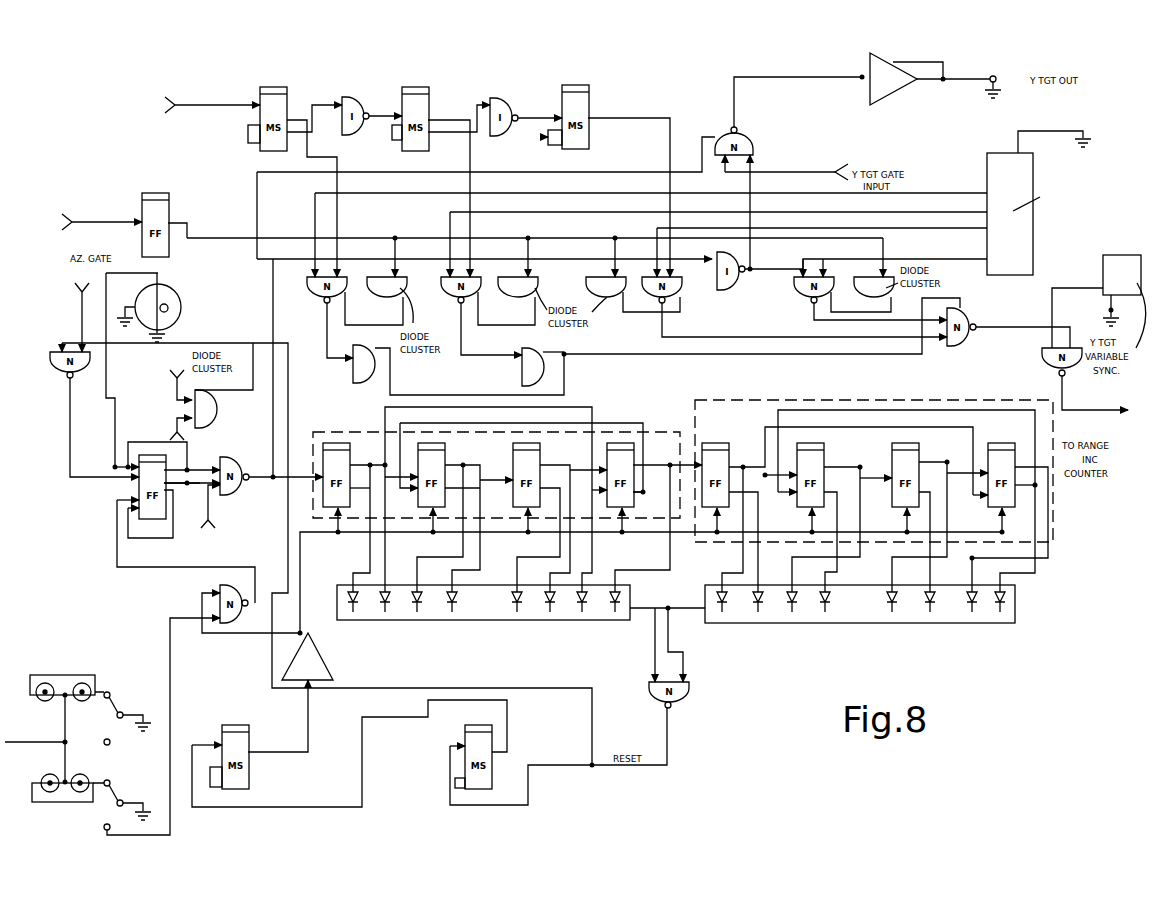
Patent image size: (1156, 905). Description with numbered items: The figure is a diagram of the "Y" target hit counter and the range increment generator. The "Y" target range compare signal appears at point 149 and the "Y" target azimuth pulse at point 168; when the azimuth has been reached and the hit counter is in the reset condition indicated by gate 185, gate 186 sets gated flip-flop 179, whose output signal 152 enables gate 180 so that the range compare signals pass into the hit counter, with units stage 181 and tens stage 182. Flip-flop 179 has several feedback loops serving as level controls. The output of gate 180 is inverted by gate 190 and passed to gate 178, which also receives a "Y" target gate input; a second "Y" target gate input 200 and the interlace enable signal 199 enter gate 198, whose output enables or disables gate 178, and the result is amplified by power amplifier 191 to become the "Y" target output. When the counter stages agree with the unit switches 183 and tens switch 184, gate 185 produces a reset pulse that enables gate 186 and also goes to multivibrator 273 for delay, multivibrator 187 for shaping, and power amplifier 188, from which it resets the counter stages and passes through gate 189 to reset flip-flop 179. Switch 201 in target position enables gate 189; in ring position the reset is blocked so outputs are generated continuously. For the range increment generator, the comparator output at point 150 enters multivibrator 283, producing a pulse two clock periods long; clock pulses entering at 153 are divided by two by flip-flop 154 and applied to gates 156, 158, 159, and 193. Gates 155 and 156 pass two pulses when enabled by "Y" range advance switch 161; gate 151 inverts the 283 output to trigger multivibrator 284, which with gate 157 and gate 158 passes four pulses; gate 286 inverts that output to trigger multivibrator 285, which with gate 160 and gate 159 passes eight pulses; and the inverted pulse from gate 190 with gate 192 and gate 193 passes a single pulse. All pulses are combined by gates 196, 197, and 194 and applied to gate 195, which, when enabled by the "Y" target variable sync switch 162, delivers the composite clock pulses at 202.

The point 150 is at (200, 104).
The multivibrator 283 is at (279, 107).
The gate 151 is at (348, 106).
The multivibrator 284 is at (425, 107).
The gate 286 is at (505, 110).
The multivibrator 285 is at (588, 106).
The gate 178 is at (744, 143).
The power amplifier 191 is at (871, 88).
The "Y" range advance switch 161 is at (987, 181).
The point 153 is at (98, 219).
The flip-flop 154 is at (161, 216).
The gate 155 is at (306, 282).
The gate 156 is at (383, 278).
The gate 157 is at (443, 280).
The gate 158 is at (500, 281).
The gate 159 is at (606, 277).
The gate 160 is at (645, 279).
The gate 190 is at (738, 258).
The gate 192 is at (797, 285).
The gate 193 is at (871, 262).
The gate 194 is at (960, 322).
The "Y" target variable sync switch 162 is at (1110, 276).
The gate 195 is at (1043, 363).
The point 202 is at (1108, 413).
The point 168 is at (77, 292).
The gate 186 is at (50, 360).
The "Y" target interlace enable signal 199 is at (173, 384).
The second "Y" target gate input 200 is at (172, 424).
The gate 198 is at (217, 408).
The gated flip-flop 179 is at (160, 468).
The gate 180 is at (229, 458).
The output signal 152 is at (203, 484).
The point 149 is at (212, 516).
The units stage 181 is at (677, 422).
The tens stage 182 is at (922, 382).
The unit switches 183 is at (337, 590).
The tens switch 184 is at (1015, 606).
The gate 189 is at (222, 590).
The power amplifier 188 is at (313, 657).
The switch 201 is at (66, 672).
The multivibrator 187 is at (245, 733).
The multivibrator 273 is at (492, 768).
The gate 185 is at (650, 690).
The gate 196 is at (353, 369).
The gate 197 is at (522, 369).